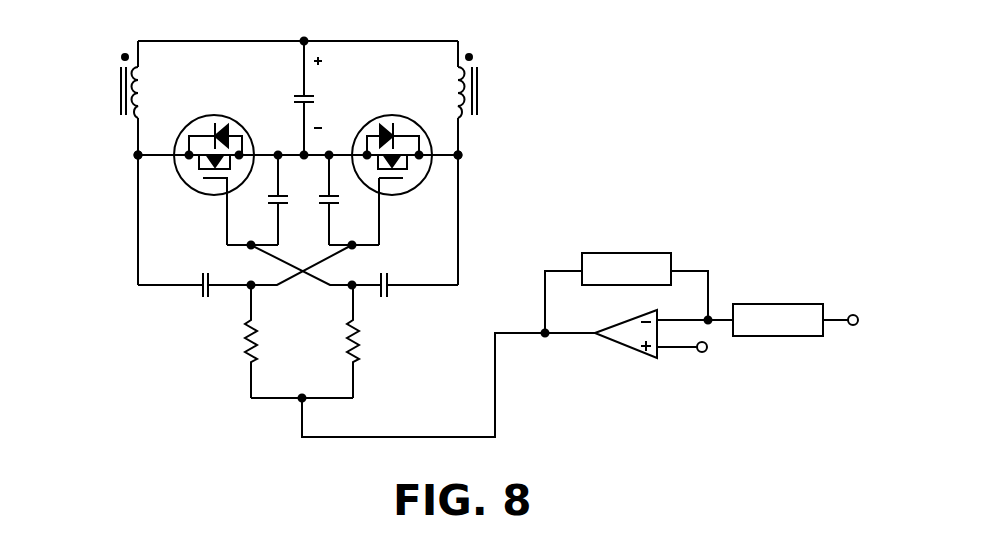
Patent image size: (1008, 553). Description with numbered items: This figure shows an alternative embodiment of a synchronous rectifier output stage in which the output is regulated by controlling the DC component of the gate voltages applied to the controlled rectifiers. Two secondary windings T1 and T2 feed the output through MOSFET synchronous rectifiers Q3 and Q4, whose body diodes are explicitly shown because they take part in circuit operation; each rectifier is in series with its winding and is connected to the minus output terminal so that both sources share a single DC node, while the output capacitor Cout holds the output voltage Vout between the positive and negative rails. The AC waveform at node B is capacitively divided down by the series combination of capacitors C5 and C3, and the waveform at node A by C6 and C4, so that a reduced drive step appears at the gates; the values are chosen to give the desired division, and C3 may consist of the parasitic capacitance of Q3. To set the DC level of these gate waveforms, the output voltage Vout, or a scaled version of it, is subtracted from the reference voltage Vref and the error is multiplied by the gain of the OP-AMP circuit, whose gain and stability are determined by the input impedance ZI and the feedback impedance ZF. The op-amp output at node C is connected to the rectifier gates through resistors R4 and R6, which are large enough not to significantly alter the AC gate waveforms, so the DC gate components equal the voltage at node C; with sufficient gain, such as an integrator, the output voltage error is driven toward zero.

The transformer T1 secondary winding T1 is at (92, 86).
The transformer T2 secondary winding T2 is at (507, 86).
The node A is at (124, 156).
The node B is at (472, 156).
The node C is at (546, 349).
The output capacitor Cout is at (273, 100).
The output voltage Vout is at (616, 207).
The MOSFET synchronous rectifier Q3 is at (210, 169).
The MOSFET synchronous rectifier Q4 is at (394, 169).
The capacitor C3 is at (257, 200).
The capacitor C4 is at (349, 200).
The capacitor C5 is at (196, 275).
The capacitor C6 is at (404, 275).
The resistor R4 is at (227, 341).
The resistor R6 is at (371, 341).
The op-amp OP-AMP is at (652, 349).
The reference voltage Vref is at (731, 368).
The feedback impedance ZF is at (626, 293).
The input impedance ZI is at (778, 320).